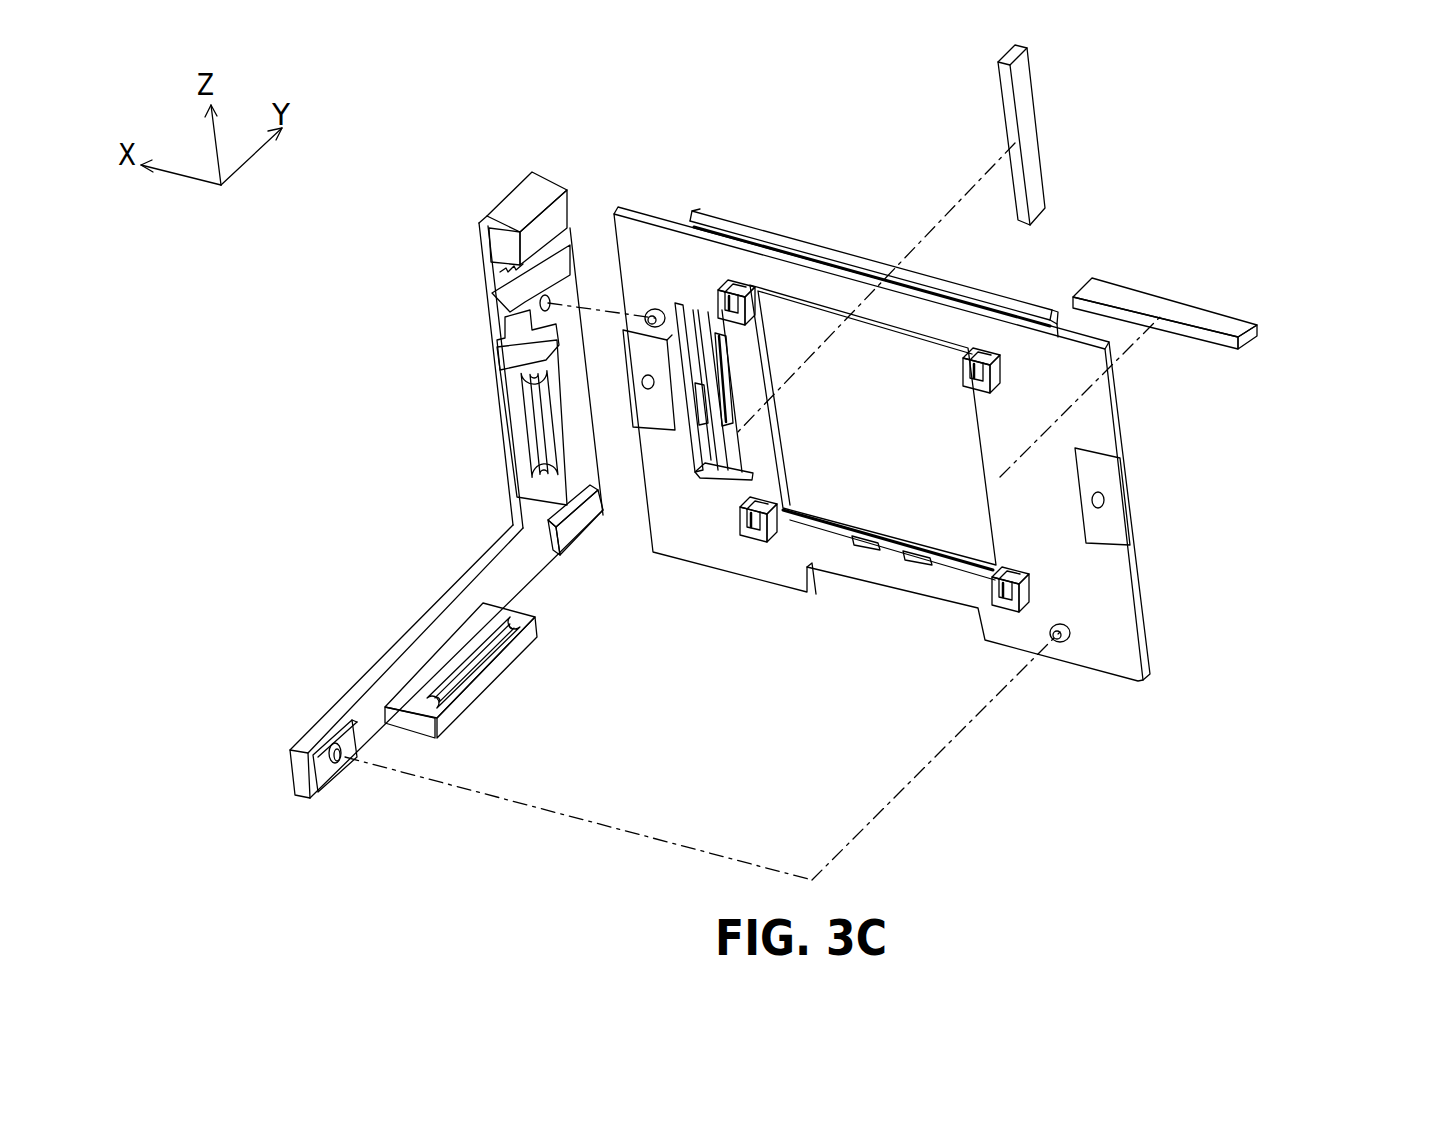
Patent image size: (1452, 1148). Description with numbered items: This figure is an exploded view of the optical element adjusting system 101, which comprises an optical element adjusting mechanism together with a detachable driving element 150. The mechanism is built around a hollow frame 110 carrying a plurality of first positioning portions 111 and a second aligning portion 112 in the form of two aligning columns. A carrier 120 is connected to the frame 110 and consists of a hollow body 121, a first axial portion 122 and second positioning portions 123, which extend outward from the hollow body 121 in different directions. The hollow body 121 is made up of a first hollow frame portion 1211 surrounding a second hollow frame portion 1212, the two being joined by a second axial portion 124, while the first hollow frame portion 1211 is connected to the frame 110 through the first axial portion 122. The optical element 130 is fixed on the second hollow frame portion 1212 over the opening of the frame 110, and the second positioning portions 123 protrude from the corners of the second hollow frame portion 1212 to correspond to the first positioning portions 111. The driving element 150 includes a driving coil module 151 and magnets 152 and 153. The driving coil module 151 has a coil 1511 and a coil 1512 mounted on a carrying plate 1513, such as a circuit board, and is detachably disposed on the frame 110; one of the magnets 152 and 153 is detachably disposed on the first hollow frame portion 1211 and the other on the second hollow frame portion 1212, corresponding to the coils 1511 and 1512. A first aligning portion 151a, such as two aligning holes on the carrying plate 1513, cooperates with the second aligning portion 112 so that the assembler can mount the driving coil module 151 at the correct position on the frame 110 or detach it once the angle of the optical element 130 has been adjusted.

The optical element adjusting system 101 is at (1437, 864).
The frame 110 is at (1122, 627).
The first positioning portion 111 is at (1030, 570).
The second aligning portion 112 is at (1066, 641).
The carrier 120 is at (688, 216).
The hollow body 121 is at (574, 497).
The first hollow frame portion 1211 is at (705, 343).
The second hollow frame portion 1212 is at (830, 515).
The first axial portion 122 is at (700, 385).
The second positioning portion 123 is at (1000, 590).
The second axial portion 124 is at (900, 550).
The optical element 130 is at (920, 365).
The driving element 150 is at (770, 452).
The driving coil module 151 is at (432, 482).
The first aligning portion 151a is at (548, 296).
The coil 1511 is at (490, 675).
The coil 1512 is at (540, 408).
The carrying plate 1513 is at (510, 572).
The magnet 152 is at (1153, 297).
The magnet 153 is at (1027, 103).